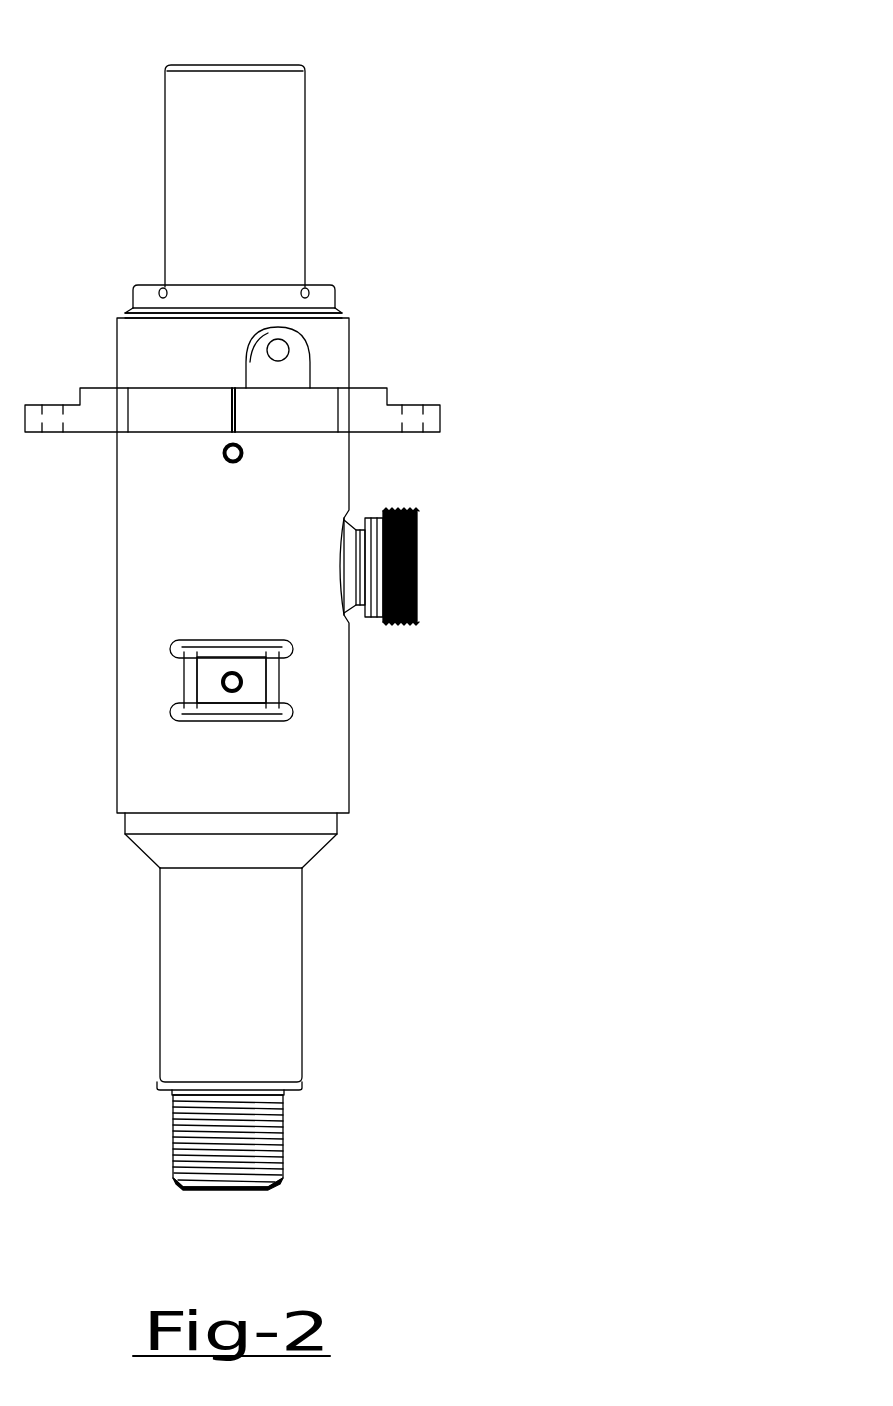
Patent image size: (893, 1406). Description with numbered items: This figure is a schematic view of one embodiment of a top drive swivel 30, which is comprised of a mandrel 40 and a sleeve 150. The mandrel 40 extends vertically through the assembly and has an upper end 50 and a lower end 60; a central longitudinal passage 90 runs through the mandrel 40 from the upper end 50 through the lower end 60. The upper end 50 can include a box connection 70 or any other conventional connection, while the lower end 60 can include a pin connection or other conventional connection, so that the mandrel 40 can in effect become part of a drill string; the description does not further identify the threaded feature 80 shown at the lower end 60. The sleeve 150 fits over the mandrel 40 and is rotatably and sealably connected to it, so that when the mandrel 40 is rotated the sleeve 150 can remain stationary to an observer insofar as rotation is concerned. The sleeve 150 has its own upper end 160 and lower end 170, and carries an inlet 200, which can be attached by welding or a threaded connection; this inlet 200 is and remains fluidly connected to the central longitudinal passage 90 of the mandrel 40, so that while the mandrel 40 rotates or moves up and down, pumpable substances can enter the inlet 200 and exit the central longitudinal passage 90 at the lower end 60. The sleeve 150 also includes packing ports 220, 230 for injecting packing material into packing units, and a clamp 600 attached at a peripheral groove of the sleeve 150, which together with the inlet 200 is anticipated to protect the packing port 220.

The top drive swivel 30 is at (480, 128).
The mandrel 40 is at (244, 181).
The upper end 50 is at (272, 200).
The lower end 60 is at (265, 1023).
The box connection 70 is at (285, 63).
The threaded end 80 is at (268, 1188).
The central longitudinal passage 90 is at (217, 1192).
The sleeve 150 is at (230, 593).
The upper end 160 is at (352, 317).
The lower end 170 is at (348, 817).
The inlet 200 is at (417, 548).
The packing port 220 is at (225, 461).
The packing port 230 is at (242, 682).
The clamp 600 is at (368, 402).